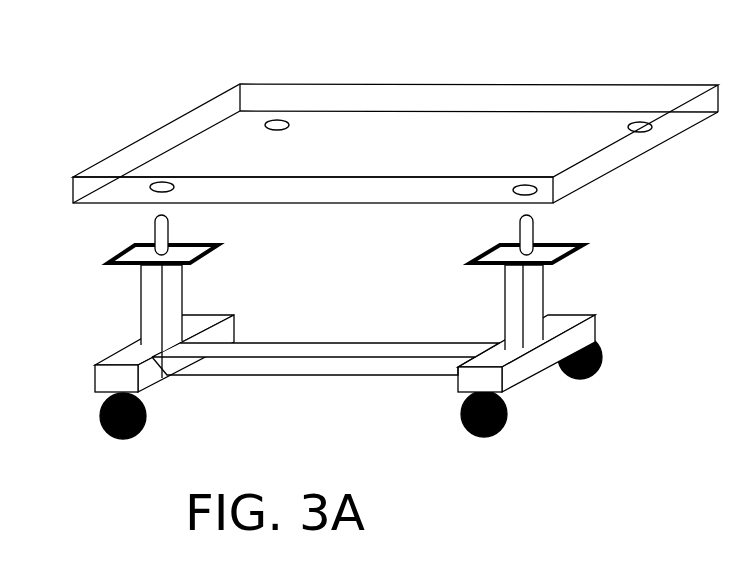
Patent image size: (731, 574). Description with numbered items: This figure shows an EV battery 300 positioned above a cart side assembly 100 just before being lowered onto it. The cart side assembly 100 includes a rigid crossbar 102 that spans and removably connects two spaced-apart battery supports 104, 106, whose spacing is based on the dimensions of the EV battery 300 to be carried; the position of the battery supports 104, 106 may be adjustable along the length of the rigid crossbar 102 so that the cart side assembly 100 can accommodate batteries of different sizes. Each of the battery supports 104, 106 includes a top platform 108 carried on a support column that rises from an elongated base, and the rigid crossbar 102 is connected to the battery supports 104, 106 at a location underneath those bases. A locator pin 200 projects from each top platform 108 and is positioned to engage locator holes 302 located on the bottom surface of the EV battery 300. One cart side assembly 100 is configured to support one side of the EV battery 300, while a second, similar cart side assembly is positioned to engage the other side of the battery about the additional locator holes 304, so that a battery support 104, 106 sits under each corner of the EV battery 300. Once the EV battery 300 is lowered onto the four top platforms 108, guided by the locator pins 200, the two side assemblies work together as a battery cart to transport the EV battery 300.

The cart side assembly 100 is at (283, 405).
The rigid crossbar 102 is at (318, 353).
The battery support 104 is at (134, 307).
The battery support 106 is at (504, 304).
The top platform 108 is at (196, 253).
The locator pin 200 is at (155, 233).
The EV battery 300 is at (447, 80).
The locator holes 302 is at (166, 183).
The additional locator holes 304 is at (275, 120).